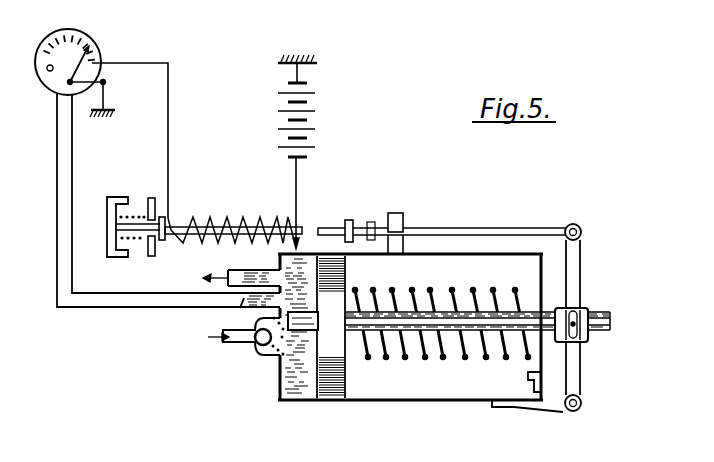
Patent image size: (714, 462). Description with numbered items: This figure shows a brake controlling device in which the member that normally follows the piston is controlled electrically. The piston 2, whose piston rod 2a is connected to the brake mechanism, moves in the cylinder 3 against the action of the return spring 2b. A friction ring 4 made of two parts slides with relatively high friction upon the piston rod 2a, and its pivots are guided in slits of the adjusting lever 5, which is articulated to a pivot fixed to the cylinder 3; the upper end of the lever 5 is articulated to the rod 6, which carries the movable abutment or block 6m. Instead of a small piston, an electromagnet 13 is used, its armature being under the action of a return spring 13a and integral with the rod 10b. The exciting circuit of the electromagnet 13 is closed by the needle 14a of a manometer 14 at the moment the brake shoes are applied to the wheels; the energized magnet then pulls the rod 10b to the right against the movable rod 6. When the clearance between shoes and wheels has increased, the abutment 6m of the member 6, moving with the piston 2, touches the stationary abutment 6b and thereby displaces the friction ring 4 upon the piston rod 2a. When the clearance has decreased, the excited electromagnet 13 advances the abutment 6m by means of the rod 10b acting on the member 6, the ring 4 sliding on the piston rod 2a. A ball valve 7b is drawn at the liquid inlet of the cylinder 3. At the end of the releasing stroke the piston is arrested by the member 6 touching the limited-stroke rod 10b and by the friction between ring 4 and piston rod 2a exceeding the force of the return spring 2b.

The manometer 14 is at (92, 63).
The needle 14a is at (70, 82).
The return spring 13a is at (140, 244).
The electromagnet 13 is at (211, 216).
The rod 10b is at (180, 226).
The rod 6 is at (328, 228).
The abutment 6m is at (353, 218).
The stationary abutment 6b is at (403, 217).
The cylinder 3 is at (300, 393).
The piston 2 is at (330, 393).
The piston rod 2a is at (438, 328).
The return spring 2b is at (388, 359).
The ball valve 7b is at (262, 343).
The adjusting lever 5 is at (579, 272).
The ring 4 is at (588, 311).